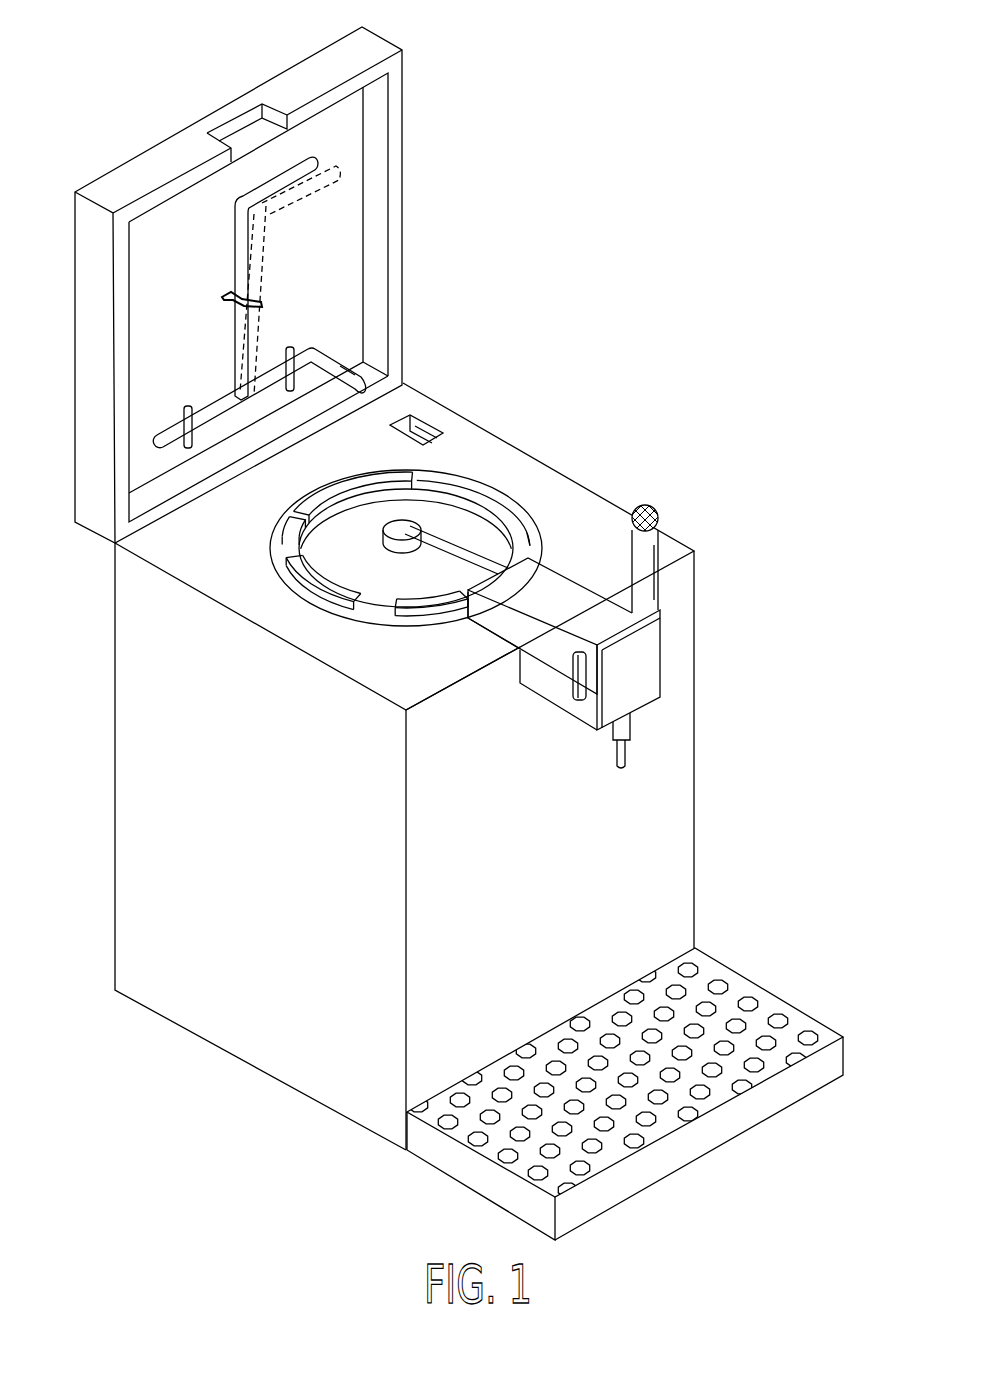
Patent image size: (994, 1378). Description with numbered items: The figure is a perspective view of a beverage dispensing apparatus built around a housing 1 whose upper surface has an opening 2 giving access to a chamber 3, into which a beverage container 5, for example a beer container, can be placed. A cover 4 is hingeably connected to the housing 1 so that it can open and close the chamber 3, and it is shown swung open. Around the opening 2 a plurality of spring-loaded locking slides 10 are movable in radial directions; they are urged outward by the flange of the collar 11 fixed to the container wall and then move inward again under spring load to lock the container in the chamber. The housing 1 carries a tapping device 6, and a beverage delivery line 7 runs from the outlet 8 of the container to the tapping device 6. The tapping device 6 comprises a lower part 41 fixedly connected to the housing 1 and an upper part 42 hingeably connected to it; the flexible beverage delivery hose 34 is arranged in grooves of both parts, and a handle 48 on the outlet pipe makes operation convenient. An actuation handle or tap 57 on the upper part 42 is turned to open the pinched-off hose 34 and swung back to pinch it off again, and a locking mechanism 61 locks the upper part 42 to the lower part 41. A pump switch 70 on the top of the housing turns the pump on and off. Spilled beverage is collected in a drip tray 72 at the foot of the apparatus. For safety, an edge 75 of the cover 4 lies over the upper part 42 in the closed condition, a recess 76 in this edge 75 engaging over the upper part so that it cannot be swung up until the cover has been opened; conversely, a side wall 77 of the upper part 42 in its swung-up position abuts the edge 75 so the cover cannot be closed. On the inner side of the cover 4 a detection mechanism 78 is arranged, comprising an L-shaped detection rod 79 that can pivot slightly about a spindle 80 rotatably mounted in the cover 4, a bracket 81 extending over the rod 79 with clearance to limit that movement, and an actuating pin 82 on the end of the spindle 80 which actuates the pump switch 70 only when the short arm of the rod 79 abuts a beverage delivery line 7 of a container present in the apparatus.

The housing 1 is at (115, 850).
The opening 2 is at (286, 510).
The chamber 3 is at (420, 490).
The cover 4 is at (259, 274).
The beverage container 5 is at (457, 528).
The tapping device 6 is at (612, 644).
The beverage delivery line 7 is at (488, 523).
The outlet 8 is at (378, 542).
The locking slides 10 is at (372, 490).
The collar 11 is at (406, 524).
The beverage delivery hose 34 is at (456, 550).
The lower part 41 is at (536, 678).
The upper part 42 is at (581, 607).
The handle 48 is at (646, 690).
The tap 57 is at (660, 514).
The locking mechanism 61 is at (583, 652).
The pump switch 70 is at (430, 425).
The drip grate 72 is at (749, 1000).
The edge 75 is at (178, 186).
The recess 76 is at (272, 116).
The side wall 77 is at (499, 622).
The detection mechanism 78 is at (274, 324).
The detection rod 79 is at (240, 245).
The spindle 80 is at (203, 418).
The bracket 81 is at (221, 294).
The actuating pin 82 is at (334, 357).